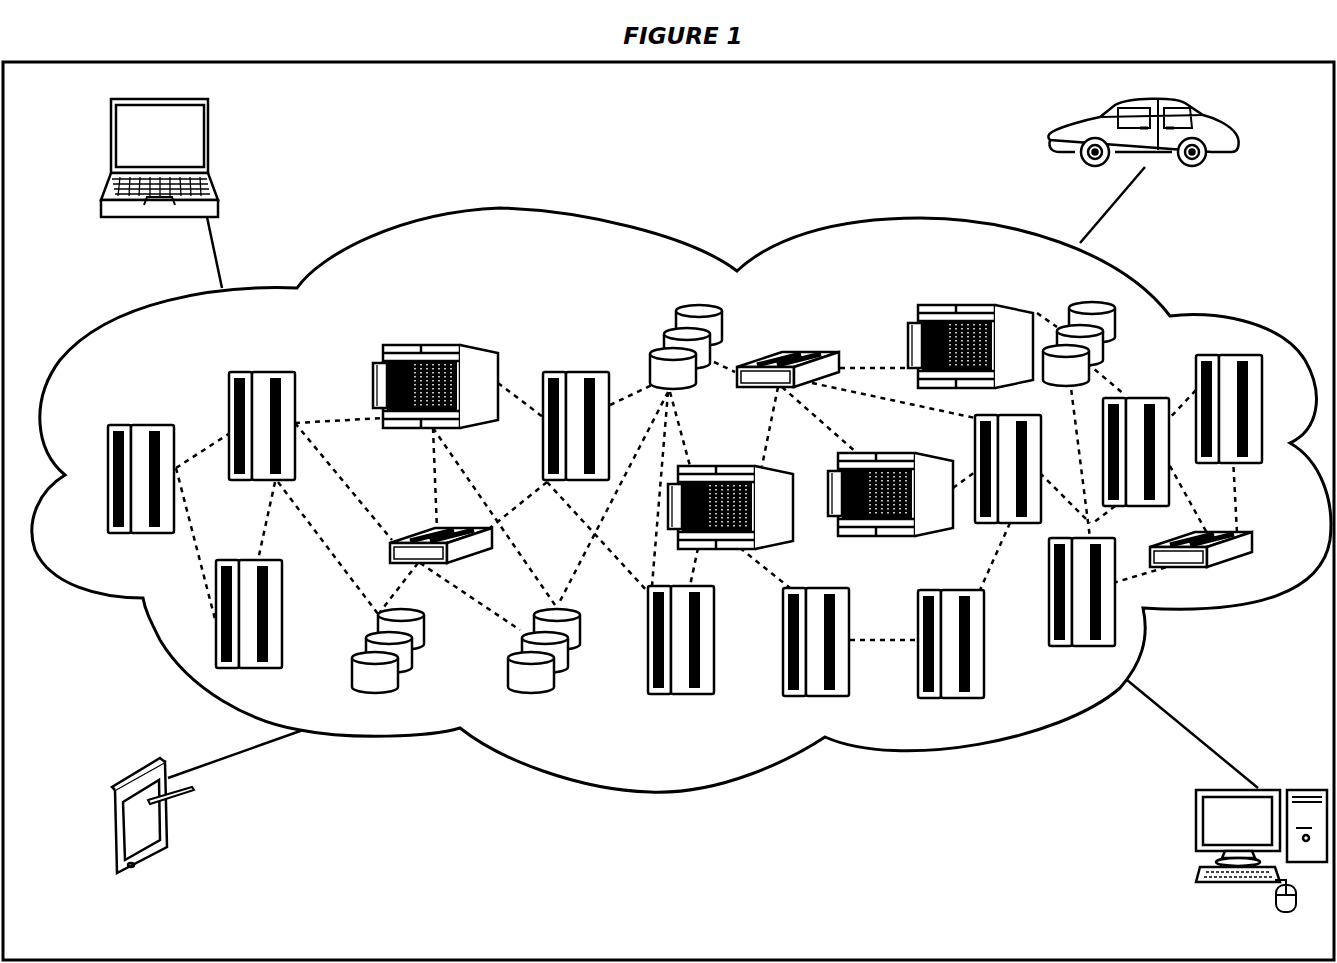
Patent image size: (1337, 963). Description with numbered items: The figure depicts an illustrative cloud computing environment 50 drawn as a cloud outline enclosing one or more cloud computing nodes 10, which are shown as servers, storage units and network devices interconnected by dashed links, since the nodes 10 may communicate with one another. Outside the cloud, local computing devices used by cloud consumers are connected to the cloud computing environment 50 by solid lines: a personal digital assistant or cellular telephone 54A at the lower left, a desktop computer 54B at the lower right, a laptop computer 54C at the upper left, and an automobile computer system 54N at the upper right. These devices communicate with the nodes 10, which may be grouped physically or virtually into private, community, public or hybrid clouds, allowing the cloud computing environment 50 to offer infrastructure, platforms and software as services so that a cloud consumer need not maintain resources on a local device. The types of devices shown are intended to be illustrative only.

The cloud computing nodes 10 is at (871, 244).
The cloud computing environment 50 is at (590, 214).
The personal digital assistant (PDA) or cellular telephone 54A is at (112, 811).
The desktop computer 54B is at (1227, 796).
The laptop computer 54C is at (161, 193).
The automobile computer system 54N is at (1258, 116).